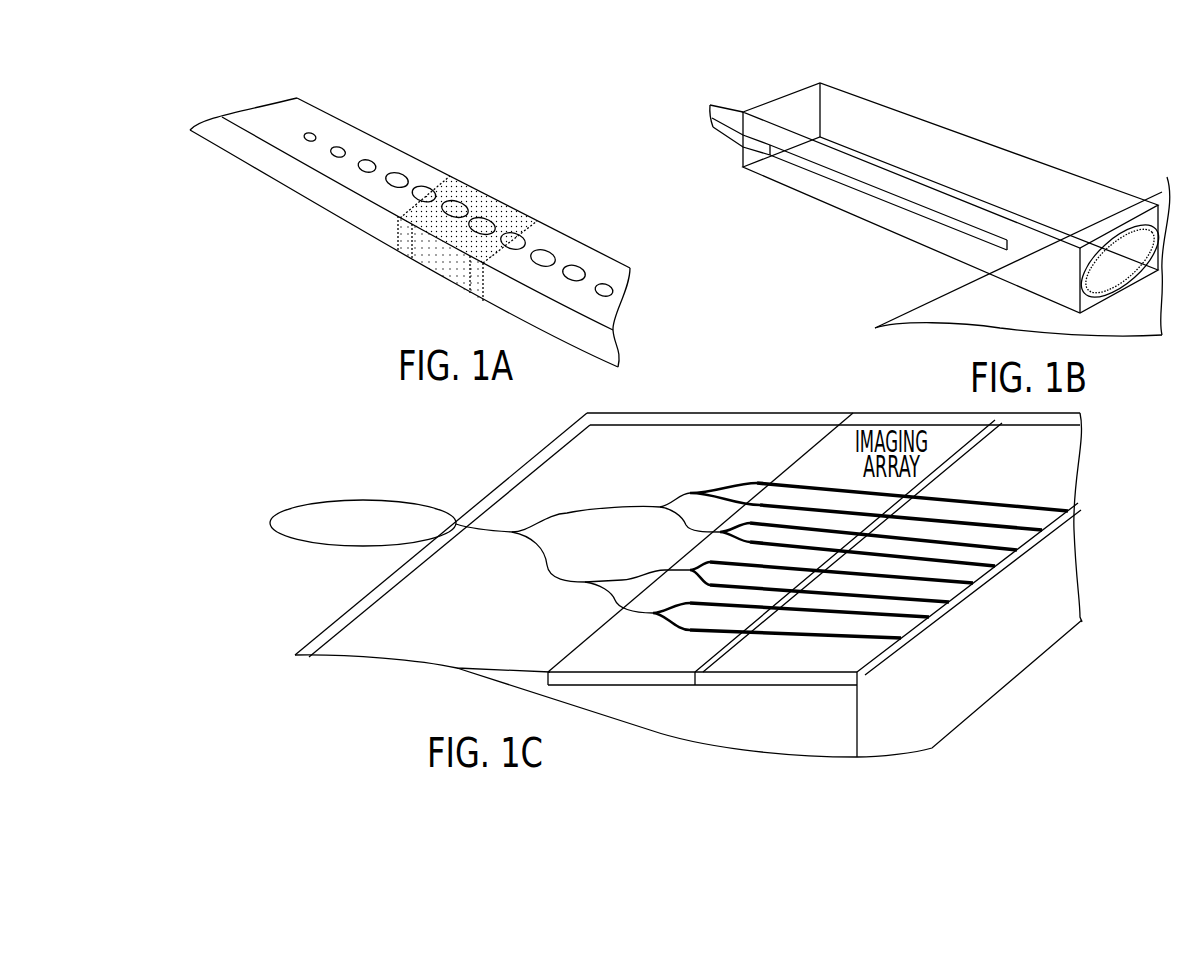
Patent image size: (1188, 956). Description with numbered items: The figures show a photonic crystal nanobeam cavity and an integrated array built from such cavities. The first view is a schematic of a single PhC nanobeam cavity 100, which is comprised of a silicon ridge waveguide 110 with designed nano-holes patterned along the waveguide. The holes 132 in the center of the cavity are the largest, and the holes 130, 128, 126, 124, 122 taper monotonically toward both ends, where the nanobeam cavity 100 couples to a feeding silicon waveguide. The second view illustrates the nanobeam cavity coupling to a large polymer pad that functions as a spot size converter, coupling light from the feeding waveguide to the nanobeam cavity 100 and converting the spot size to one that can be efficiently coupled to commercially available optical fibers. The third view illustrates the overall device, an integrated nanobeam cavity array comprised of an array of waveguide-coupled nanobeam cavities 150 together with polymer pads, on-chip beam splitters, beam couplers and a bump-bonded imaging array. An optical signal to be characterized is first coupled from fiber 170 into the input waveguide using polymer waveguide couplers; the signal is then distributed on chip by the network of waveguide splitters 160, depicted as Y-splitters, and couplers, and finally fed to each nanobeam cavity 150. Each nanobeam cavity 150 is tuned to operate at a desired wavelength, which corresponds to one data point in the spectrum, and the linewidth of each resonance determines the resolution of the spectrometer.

In FIG. 1A, the PhC nanobeam cavity 100 is at (497, 54).
In FIG. 1A, the silicon ridge waveguide 110 is at (265, 123).
In FIG. 1A, the hole 122 is at (312, 134).
In FIG. 1A, the hole 124 is at (340, 151).
In FIG. 1A, the hole 126 is at (372, 166).
In FIG. 1A, the hole 128 is at (395, 181).
In FIG. 1A, the hole 130 is at (423, 196).
In FIG. 1A, the hole 132 is at (481, 230).
In FIG. 1C, the waveguide-coupled nanobeam cavity 150 is at (830, 489).
In FIG. 1C, the waveguide splitter 160 is at (665, 505).
In FIG. 1C, the fiber 170 is at (291, 510).